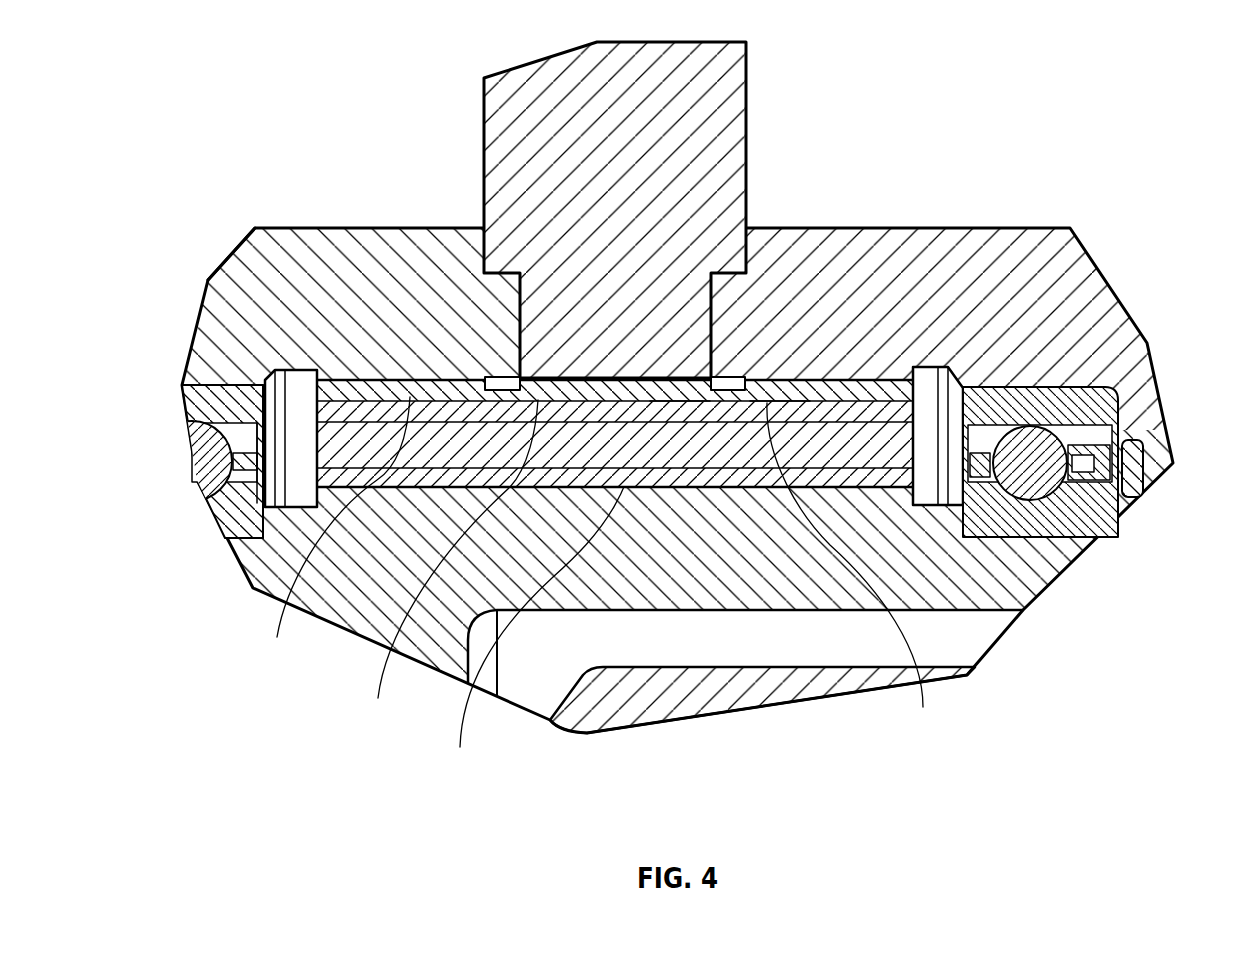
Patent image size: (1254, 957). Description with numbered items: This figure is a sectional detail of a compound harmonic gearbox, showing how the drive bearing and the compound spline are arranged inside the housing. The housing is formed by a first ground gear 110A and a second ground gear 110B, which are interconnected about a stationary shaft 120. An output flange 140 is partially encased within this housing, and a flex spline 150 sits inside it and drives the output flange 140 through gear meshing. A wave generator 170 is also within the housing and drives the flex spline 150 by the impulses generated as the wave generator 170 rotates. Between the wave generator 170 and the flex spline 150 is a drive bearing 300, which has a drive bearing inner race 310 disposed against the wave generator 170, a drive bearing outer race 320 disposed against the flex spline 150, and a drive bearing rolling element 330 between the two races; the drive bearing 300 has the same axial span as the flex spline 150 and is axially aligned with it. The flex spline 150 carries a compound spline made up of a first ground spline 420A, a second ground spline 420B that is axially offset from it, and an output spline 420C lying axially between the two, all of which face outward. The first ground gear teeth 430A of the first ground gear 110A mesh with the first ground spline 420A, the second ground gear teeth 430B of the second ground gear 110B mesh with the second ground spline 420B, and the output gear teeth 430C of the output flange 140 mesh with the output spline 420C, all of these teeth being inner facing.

The first ground gear 110A is at (380, 253).
The second ground gear 110B is at (1073, 267).
The stationary shaft 120 is at (750, 692).
The output flange 140 is at (708, 132).
The flex spline 150 is at (731, 585).
The wave generator 170 is at (368, 590).
The drive bearing 300 is at (340, 461).
The drive bearing inner race 310 is at (898, 482).
The drive bearing outer race 320 is at (873, 413).
The drive bearing rolling element 330 is at (880, 448).
The first ground spline 420A is at (330, 534).
The second ground spline 420B is at (862, 569).
The output spline 420C is at (444, 565).
The first ground gear teeth 430A is at (255, 227).
The second ground gear teeth 430B is at (780, 385).
The output gear teeth 430C is at (679, 378).